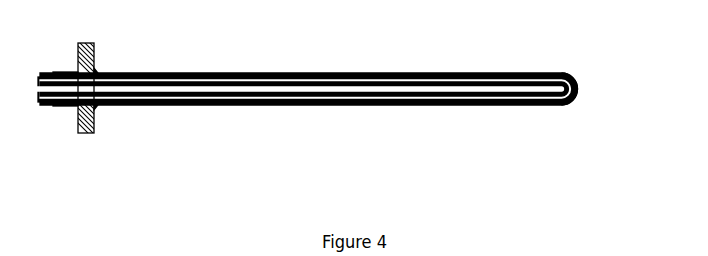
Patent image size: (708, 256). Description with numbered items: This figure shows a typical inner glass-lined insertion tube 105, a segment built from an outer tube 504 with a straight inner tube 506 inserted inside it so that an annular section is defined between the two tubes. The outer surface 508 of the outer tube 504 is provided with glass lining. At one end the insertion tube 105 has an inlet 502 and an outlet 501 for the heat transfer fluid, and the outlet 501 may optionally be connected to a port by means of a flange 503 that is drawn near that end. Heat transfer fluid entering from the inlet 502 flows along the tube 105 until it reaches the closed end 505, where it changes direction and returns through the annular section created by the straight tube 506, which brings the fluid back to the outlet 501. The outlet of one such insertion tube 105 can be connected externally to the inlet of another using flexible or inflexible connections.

The outlet 501 is at (64, 75).
The inlet 502 is at (38, 88).
The flange 503 is at (95, 55).
The outer tube 504 is at (217, 73).
The inner glass-lined insertion tube 105 is at (298, 57).
The outer surface 508 is at (400, 65).
The closed end 505 is at (587, 62).
The straight inner tube 506 is at (452, 105).